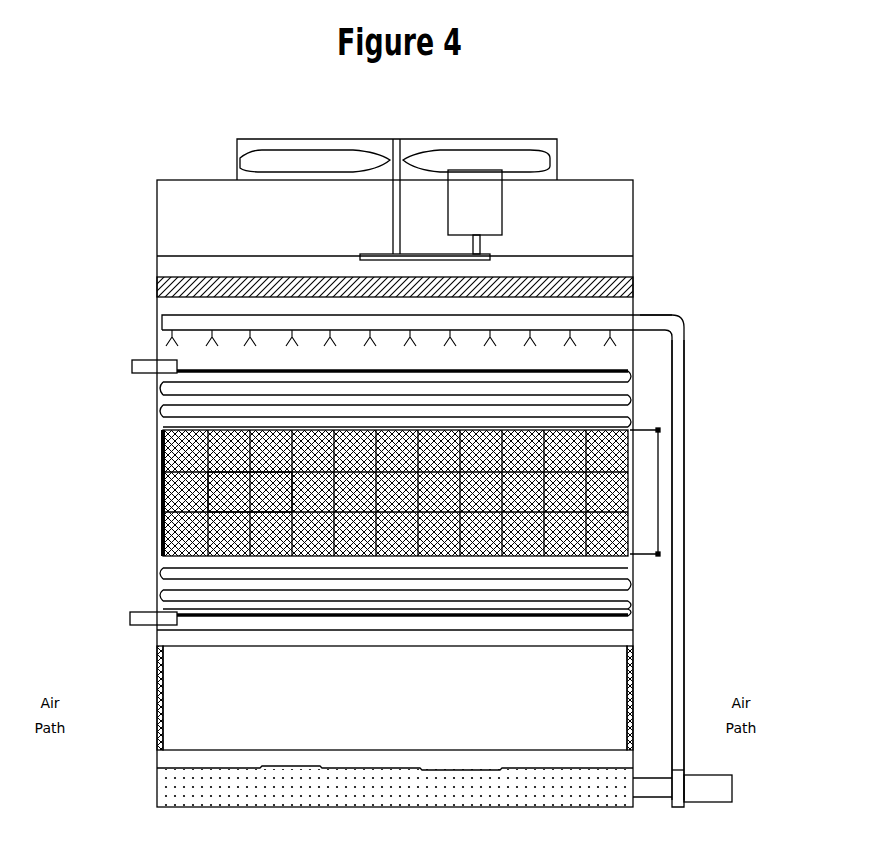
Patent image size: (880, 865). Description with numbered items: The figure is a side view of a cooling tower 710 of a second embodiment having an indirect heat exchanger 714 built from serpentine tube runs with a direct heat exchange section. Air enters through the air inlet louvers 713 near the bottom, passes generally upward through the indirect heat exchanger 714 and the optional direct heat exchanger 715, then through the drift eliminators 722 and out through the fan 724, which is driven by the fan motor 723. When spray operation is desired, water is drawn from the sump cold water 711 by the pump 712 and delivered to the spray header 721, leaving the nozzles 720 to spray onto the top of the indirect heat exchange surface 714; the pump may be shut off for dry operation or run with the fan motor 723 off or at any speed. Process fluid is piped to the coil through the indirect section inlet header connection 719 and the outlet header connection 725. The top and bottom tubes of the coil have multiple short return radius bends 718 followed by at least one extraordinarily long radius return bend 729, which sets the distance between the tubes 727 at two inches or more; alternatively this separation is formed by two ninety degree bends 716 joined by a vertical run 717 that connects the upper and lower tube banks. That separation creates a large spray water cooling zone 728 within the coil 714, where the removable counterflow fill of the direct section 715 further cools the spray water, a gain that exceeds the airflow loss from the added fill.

The cooling tower 710 is at (147, 177).
The sump cold water 711 is at (157, 790).
The pump 712 is at (732, 783).
The air inlet louvers 713 is at (157, 670).
The indirect heat exchanger 714 is at (161, 572).
The direct heat exchanger 715 is at (161, 501).
The 90 degree bends 716 is at (160, 428).
The vertical run 717 is at (161, 534).
The short return radius bends 718 is at (637, 372).
The indirect section inlet header connection 719 is at (132, 365).
The nozzles 720 is at (160, 331).
The spray header 721 is at (650, 317).
The drift eliminators 722 is at (597, 276).
The fan motor 723 is at (500, 222).
The fan 724 is at (243, 157).
The outlet header connection 725 is at (130, 614).
The distance between the tubes 727 is at (662, 474).
The large spray water cooling zone 728 is at (633, 493).
The extraordinarily long radius return bend 729 is at (161, 462).